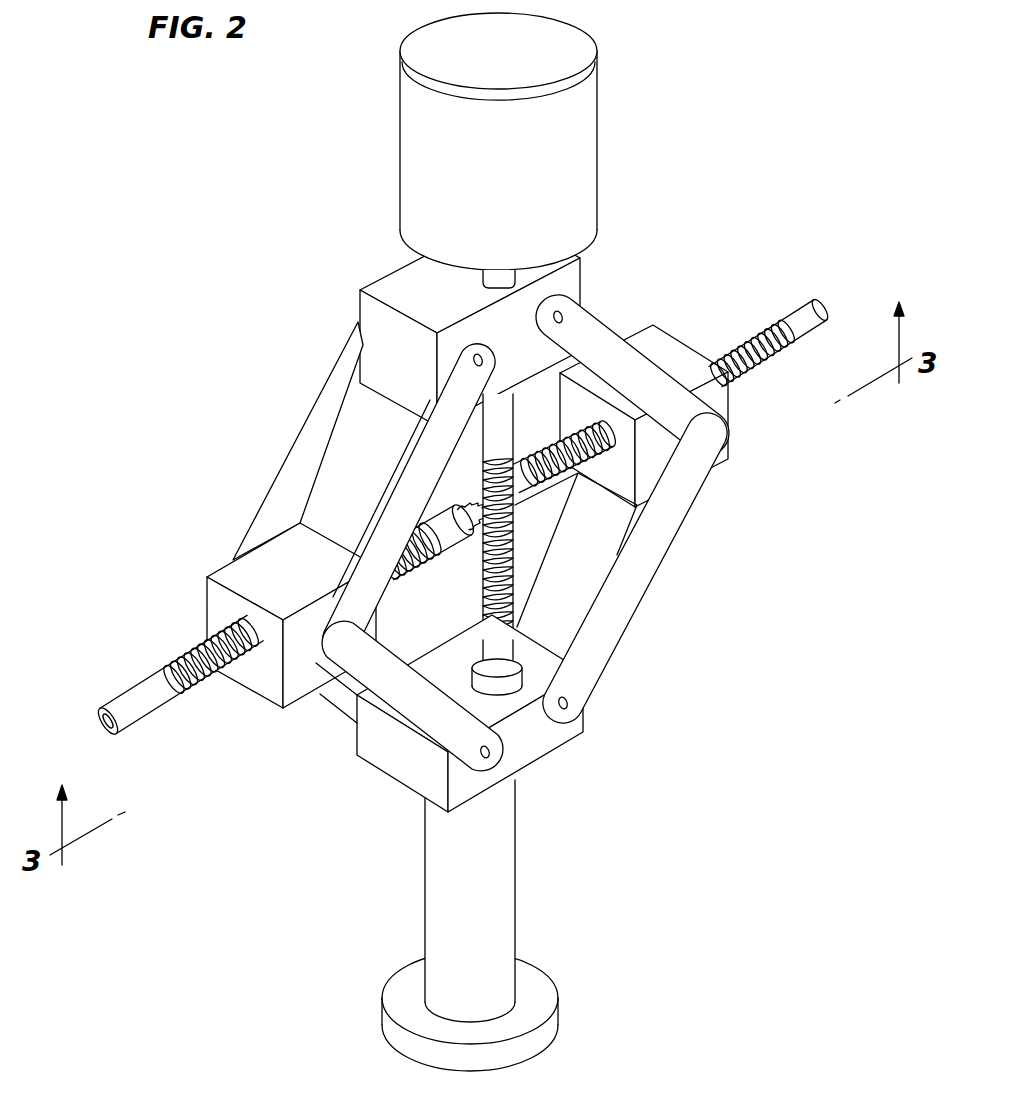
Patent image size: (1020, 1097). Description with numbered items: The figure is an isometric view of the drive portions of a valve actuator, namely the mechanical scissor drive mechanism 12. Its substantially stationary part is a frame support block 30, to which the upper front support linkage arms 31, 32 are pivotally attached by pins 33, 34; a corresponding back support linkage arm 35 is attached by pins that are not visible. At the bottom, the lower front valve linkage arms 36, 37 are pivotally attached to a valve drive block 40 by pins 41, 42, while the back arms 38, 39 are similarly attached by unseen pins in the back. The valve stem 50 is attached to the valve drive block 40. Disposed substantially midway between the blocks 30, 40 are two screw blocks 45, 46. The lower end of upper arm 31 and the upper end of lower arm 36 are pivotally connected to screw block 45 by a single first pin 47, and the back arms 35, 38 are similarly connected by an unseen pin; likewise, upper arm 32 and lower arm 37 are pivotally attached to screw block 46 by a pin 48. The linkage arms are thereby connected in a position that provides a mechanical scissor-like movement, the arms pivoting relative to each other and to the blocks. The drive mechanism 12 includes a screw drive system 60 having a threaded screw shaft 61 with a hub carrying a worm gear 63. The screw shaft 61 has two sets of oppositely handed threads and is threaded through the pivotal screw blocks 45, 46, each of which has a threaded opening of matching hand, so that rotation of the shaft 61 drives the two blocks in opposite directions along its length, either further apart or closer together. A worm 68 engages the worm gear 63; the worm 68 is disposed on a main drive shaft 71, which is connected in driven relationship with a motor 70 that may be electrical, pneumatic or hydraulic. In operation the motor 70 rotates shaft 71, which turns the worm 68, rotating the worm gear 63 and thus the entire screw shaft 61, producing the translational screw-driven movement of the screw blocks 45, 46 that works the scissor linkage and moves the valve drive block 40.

The drive mechanism 12 is at (232, 294).
The frame support block 30 is at (368, 314).
The upper front support linkage arm 31 is at (389, 511).
The upper front support linkage arm 32 is at (662, 360).
The pin 33 is at (470, 352).
The pin 34 is at (565, 312).
The back support linkage arm 35 is at (303, 423).
The lower front valve linkage arm 36 is at (446, 702).
The lower front valve linkage arm 37 is at (635, 570).
The back valve linkage arm 38 is at (343, 697).
The back valve linkage arm 39 is at (537, 515).
The valve drive block 40 is at (397, 755).
The pin 41 is at (493, 750).
The pin 42 is at (570, 704).
The screw block 45 is at (217, 597).
The screw block 46 is at (685, 357).
The first pin 47 is at (330, 652).
The pin 48 is at (712, 432).
The valve stem 50 is at (505, 880).
The screw drive system 60 is at (521, 500).
The screw shaft 61 is at (165, 698).
The worm gear 63 is at (462, 548).
The worm 68 is at (496, 510).
The motor 70 is at (590, 128).
The main drive shaft 71 is at (500, 410).